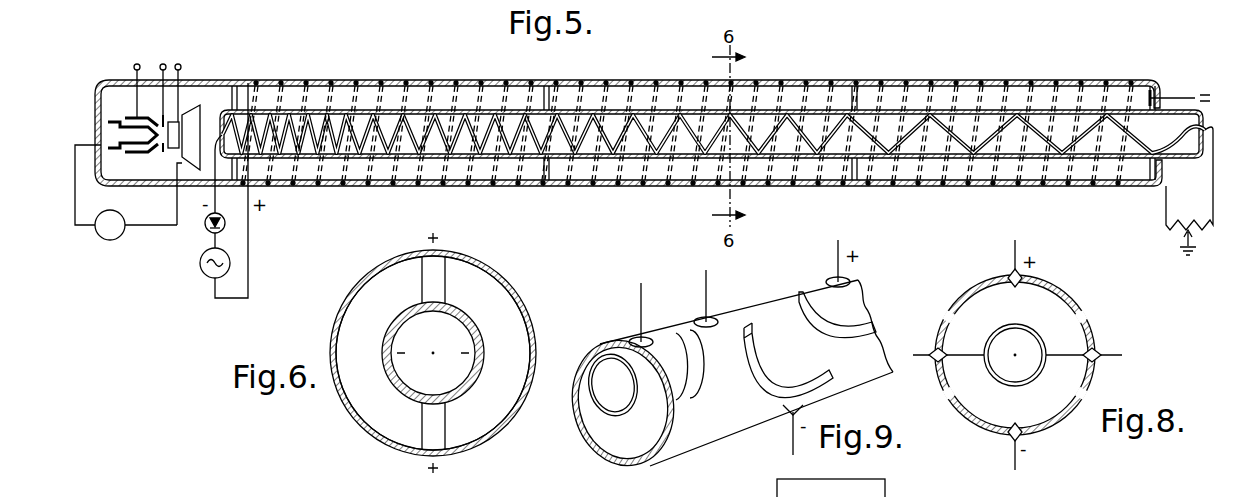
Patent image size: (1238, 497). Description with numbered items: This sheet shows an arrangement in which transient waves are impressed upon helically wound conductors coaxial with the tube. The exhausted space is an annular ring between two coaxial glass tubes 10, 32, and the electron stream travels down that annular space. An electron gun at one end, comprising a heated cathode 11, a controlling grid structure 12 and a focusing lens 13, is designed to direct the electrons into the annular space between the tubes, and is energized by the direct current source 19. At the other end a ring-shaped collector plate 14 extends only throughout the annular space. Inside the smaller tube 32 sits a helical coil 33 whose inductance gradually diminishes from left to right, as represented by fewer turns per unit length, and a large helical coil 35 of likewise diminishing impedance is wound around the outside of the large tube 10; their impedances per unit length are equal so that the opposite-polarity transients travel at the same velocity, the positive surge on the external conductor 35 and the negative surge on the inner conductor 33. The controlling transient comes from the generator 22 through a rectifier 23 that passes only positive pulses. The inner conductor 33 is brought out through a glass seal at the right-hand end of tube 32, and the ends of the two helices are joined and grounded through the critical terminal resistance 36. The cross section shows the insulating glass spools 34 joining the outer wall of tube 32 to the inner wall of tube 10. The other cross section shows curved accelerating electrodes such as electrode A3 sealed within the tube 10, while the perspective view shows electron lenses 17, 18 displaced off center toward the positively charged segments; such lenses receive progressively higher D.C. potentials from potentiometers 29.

In FIG. 5, the evacuated tube 10 is at (297, 85).
In FIG. 6, the evacuated tube 10 is at (512, 290).
In FIG. 9, the evacuated tube 10 is at (634, 468).
In FIG. 8, the evacuated tube 10 is at (1092, 340).
In FIG. 5, the cathode 11 is at (118, 121).
In FIG. 5, the controlling grid structure 12 is at (150, 152).
In FIG. 5, the focusing lens 13 is at (163, 116).
In FIG. 5, the collecting electrode 14 is at (1152, 168).
In FIG. 8, the electron lens 17 is at (1000, 378).
In FIG. 9, the electron lens 18 is at (612, 410).
In FIG. 5, the direct current energizing source 19 is at (119, 234).
In FIG. 5, the generator 22 is at (200, 268).
In FIG. 5, the rectifier 23 is at (206, 229).
In FIG. 9, the potentiometers 29 is at (846, 486).
In FIG. 5, the inner tube 32 is at (358, 160).
In FIG. 6, the inner tube 32 is at (480, 335).
In FIG. 5, the helical coil 33 is at (876, 152).
In FIG. 6, the helical coil 33 is at (435, 306).
In FIG. 5, the insulating glass spools 34 is at (553, 175).
In FIG. 6, the insulating glass spools 34 is at (446, 414).
In FIG. 5, the helical coil 35 is at (479, 188).
In FIG. 6, the helical coil 35 is at (532, 318).
In FIG. 5, the critical terminal resistance 36 is at (1203, 234).
In FIG. 8, the curved accelerating electrode A3 is at (1047, 297).